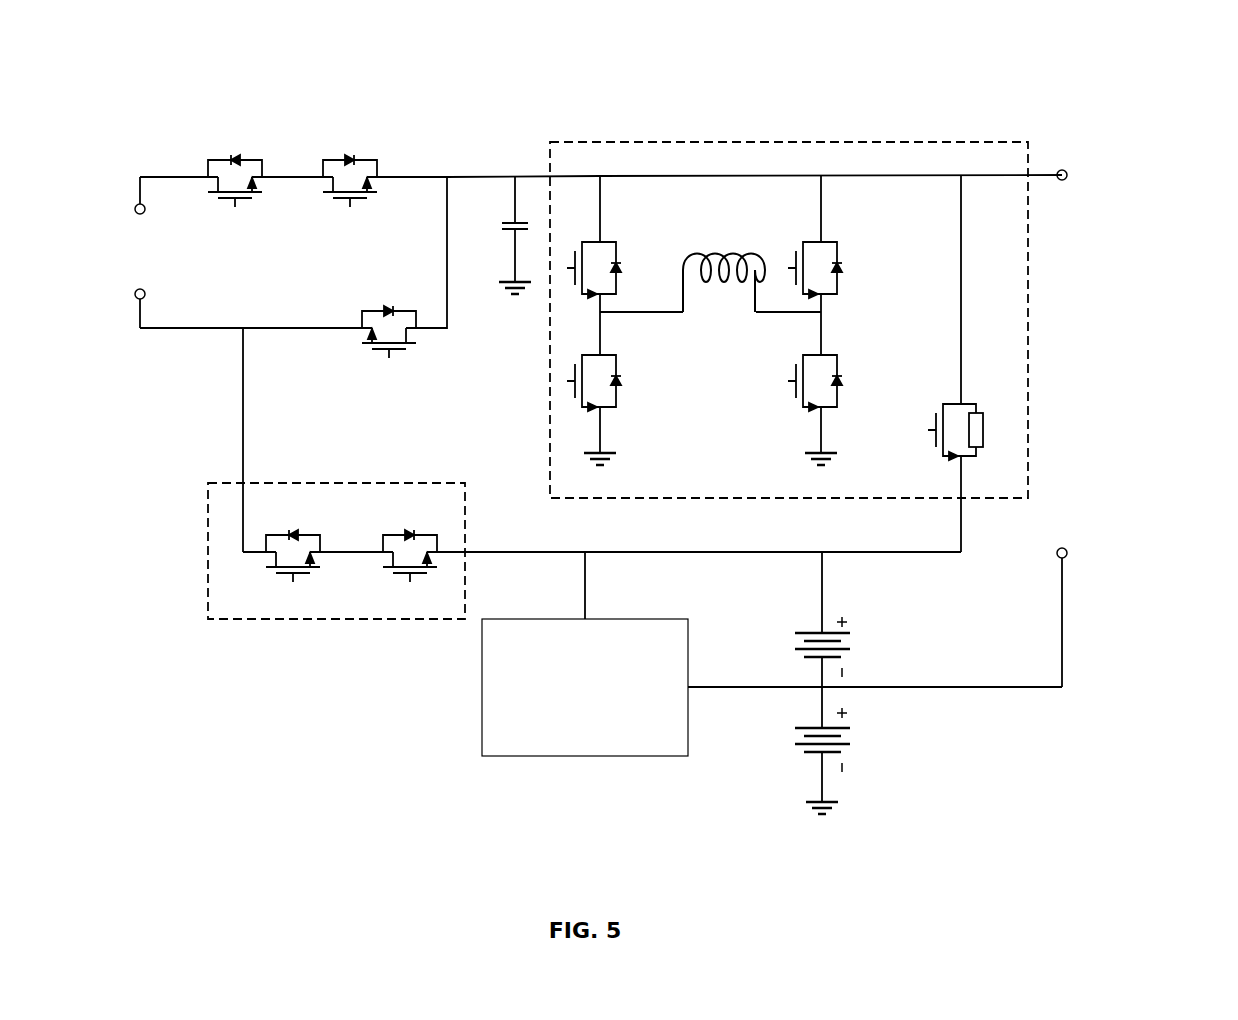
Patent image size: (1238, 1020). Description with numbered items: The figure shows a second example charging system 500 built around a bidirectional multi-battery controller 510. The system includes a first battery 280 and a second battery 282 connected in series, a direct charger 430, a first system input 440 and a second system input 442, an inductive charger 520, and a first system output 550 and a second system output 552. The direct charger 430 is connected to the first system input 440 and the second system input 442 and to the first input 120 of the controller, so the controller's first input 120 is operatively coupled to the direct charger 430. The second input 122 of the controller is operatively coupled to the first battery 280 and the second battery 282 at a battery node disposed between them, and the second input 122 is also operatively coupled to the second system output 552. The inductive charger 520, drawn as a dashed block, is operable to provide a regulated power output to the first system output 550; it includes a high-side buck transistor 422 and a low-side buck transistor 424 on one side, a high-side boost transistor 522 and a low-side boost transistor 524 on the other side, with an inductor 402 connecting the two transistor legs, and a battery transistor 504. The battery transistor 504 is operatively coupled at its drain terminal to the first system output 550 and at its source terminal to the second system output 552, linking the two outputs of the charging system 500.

The charging system 500 is at (1185, 28).
The first system input 440 is at (116, 198).
The second system input 442 is at (116, 306).
The first system output 550 is at (1084, 176).
The second system output 552 is at (1084, 615).
The inductive charger 520 is at (707, 202).
The high-side buck transistor 422 is at (614, 244).
The low-side buck transistor 424 is at (614, 388).
The high-side boost transistor 522 is at (835, 243).
The low-side boost transistor 524 is at (835, 388).
The inductor 402 is at (710, 297).
The battery transistor 504 is at (933, 363).
The direct charger 430 is at (330, 520).
The first input 120 is at (754, 556).
The second input 122 is at (759, 691).
The first battery 280 is at (799, 619).
The second battery 282 is at (799, 750).
The bidirectional multi-battery controller 510 is at (638, 747).